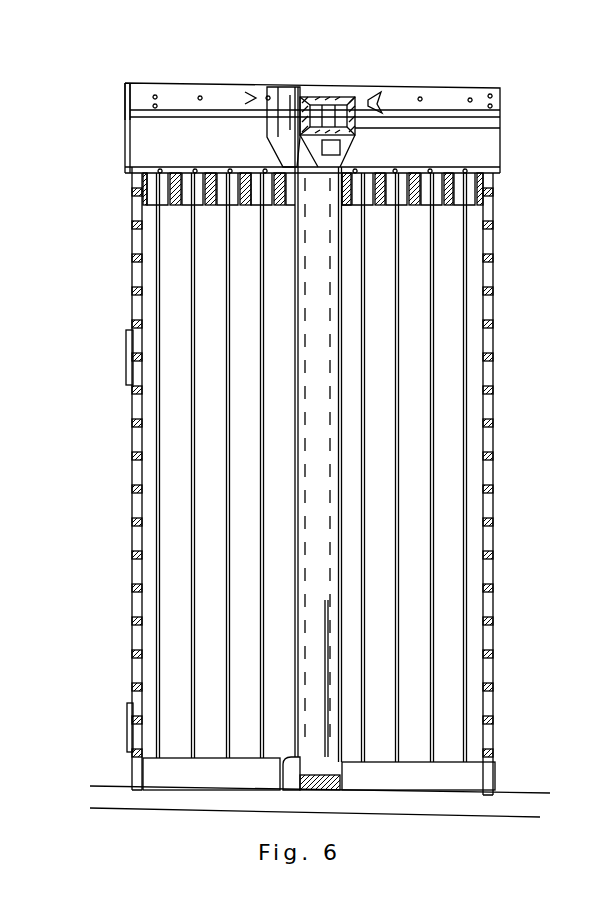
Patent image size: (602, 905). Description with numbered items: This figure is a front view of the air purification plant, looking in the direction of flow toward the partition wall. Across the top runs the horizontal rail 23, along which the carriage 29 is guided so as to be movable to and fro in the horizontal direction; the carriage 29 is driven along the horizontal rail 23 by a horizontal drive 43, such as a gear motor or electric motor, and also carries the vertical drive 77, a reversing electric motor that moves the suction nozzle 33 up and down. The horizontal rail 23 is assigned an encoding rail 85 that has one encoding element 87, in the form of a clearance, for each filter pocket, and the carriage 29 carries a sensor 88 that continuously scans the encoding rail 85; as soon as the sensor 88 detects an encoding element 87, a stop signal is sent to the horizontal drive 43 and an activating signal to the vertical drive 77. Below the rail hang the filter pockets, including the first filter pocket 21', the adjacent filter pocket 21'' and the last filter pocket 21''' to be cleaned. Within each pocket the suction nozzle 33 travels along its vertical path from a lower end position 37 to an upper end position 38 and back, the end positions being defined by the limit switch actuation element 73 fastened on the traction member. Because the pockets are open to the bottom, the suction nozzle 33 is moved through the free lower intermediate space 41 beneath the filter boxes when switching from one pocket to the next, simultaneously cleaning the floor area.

The horizontal rail 23 is at (180, 95).
The sensor 88 is at (317, 97).
The vertical drive 77 is at (382, 102).
The encoding rail 85 is at (127, 108).
The encoding element 87 is at (175, 115).
The horizontal drive 43 is at (500, 132).
The carriage 29 is at (335, 153).
The upper end position 38 is at (500, 177).
The limit switch actuation element 73 is at (71, 478).
The last filter pocket 21''' is at (156, 465).
The adjacent filter pocket 21'' is at (429, 424).
The first filter pocket 21' is at (479, 467).
The free lower intermediate space 41 is at (213, 777).
The lower end position 37 is at (545, 767).
The suction nozzle 33 is at (338, 792).